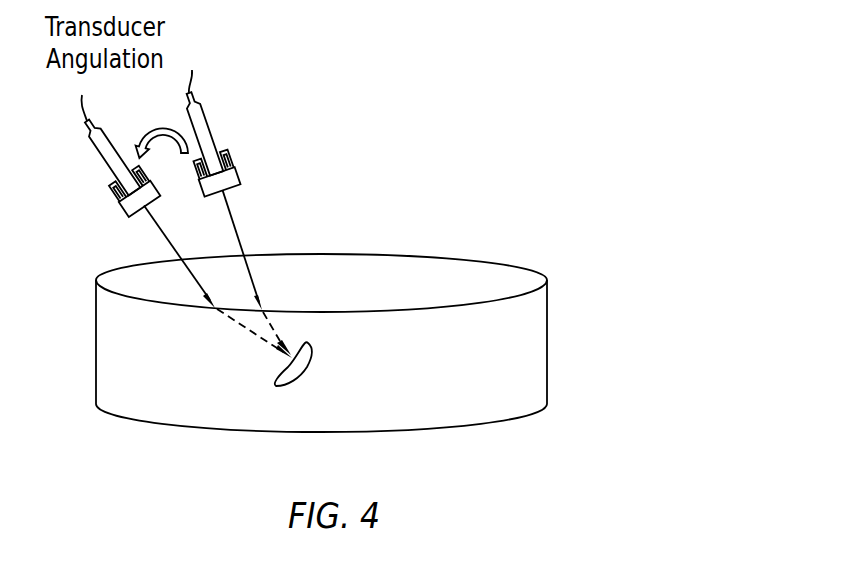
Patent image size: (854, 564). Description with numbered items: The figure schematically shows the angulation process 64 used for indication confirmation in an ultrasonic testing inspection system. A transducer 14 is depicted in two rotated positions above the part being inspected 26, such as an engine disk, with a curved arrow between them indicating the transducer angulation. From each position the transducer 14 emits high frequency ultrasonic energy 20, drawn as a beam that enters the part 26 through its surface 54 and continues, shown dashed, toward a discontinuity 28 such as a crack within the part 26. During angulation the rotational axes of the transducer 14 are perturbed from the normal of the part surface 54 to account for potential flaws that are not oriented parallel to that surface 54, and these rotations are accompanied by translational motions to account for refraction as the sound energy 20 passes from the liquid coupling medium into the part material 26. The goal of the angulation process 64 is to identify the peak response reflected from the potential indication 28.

The transducer 14 is at (111, 171).
The ultrasonic energy 20 is at (163, 231).
The part being inspected 26 is at (368, 308).
The discontinuity 28 is at (314, 353).
The surface 54 is at (465, 270).
The angulation process 64 is at (443, 93).